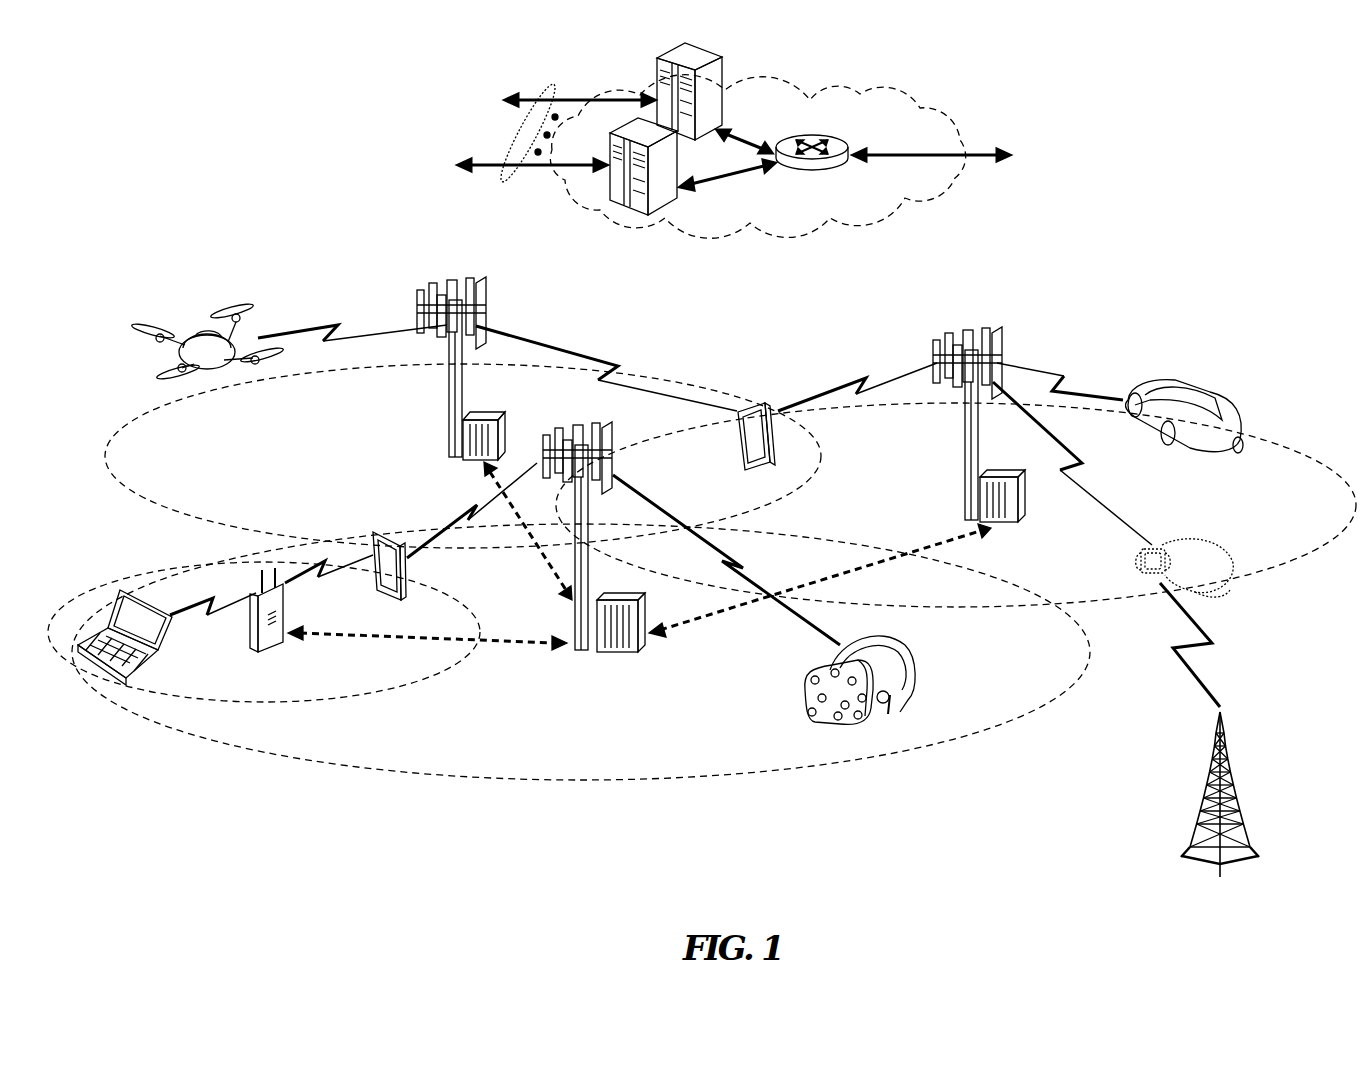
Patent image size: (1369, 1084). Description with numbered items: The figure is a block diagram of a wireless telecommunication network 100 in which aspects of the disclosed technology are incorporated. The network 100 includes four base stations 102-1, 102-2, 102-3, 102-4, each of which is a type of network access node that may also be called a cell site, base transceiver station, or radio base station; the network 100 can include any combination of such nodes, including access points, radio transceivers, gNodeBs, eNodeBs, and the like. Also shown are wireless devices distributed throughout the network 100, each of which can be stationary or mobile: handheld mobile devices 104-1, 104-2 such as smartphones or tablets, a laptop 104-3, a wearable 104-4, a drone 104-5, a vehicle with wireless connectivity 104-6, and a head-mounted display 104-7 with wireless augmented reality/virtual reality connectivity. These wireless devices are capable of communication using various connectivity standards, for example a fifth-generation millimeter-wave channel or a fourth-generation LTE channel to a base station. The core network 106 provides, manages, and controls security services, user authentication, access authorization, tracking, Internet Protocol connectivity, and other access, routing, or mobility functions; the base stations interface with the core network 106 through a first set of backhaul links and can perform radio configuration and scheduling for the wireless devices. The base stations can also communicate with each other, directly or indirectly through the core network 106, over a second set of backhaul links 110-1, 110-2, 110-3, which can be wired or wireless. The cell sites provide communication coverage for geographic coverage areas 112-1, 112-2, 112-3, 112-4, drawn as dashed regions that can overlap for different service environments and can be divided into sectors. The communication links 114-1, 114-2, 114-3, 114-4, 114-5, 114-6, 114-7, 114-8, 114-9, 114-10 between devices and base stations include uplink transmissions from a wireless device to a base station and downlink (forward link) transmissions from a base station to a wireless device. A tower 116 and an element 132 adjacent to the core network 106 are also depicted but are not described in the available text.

The wireless telecommunication network 100 is at (1256, 144).
The base station 102-1 is at (583, 652).
The base station 102-2 is at (447, 403).
The base station 102-3 is at (962, 440).
The base station 102-4 is at (257, 638).
The handheld mobile device 104-1 is at (448, 582).
The handheld mobile device 104-2 is at (733, 443).
The laptop 104-3 is at (102, 672).
The wearable 104-4 is at (1167, 543).
The drone 104-5 is at (213, 372).
The vehicle with wireless connectivity 104-6 is at (1202, 397).
The head-mounted display 104-7 is at (917, 665).
The core network 106 is at (843, 221).
The backhaul link 110-1 is at (323, 640).
The backhaul link 110-2 is at (887, 563).
The backhaul link 110-3 is at (547, 563).
The geographic coverage area 112-1 is at (508, 780).
The geographic coverage area 112-2 is at (387, 690).
The geographic coverage area 112-3 is at (163, 508).
The geographic coverage area 112-4 is at (1260, 440).
The communication link 114-1 is at (738, 563).
The communication link 114-2 is at (472, 508).
The communication link 114-3 is at (183, 618).
The communication link 114-4 is at (325, 577).
The communication link 114-5 is at (333, 325).
The communication link 114-6 is at (612, 368).
The communication link 114-7 is at (860, 382).
The communication link 114-8 is at (1082, 475).
The communication link 114-9 is at (1057, 377).
The communication link 114-10 is at (1202, 650).
The satellite / relay tower 116 is at (1235, 772).
The network interface 132 is at (540, 193).